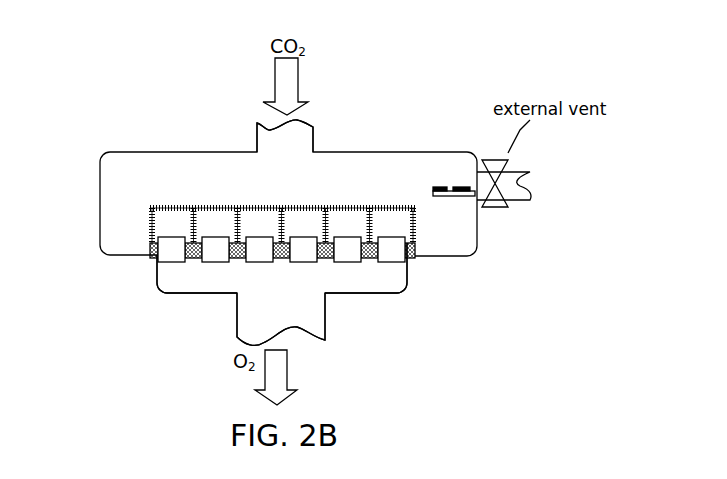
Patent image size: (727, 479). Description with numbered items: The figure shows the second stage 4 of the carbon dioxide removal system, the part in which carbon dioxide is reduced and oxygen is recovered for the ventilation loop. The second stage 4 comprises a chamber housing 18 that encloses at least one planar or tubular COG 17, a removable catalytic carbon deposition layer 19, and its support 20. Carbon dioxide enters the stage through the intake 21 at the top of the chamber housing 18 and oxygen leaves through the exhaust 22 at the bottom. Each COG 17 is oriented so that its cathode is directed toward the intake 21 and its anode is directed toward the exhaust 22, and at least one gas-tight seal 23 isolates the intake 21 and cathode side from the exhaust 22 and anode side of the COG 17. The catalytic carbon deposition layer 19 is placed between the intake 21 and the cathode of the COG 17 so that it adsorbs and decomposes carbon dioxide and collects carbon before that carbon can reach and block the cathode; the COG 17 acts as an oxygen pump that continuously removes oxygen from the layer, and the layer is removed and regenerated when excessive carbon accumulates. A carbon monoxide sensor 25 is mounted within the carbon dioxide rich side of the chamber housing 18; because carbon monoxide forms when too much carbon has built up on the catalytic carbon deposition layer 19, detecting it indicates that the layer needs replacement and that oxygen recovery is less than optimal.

The second stage 4 is at (159, 61).
The COG 17 is at (350, 265).
The chamber housing 18 is at (348, 150).
The catalytic carbon deposition layer 19 is at (172, 205).
The support 20 is at (153, 250).
The intake 21 is at (263, 131).
The exhaust 22 is at (295, 323).
The gas-tight seal 23 is at (193, 259).
The carbon monoxide sensor 25 is at (452, 197).